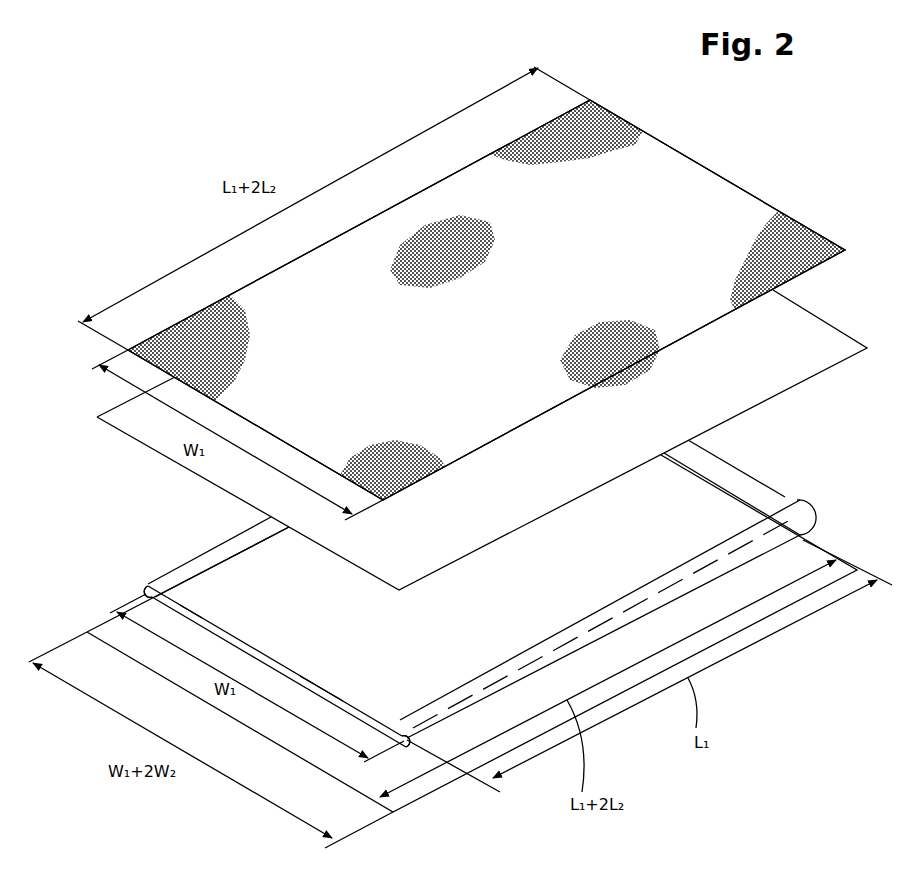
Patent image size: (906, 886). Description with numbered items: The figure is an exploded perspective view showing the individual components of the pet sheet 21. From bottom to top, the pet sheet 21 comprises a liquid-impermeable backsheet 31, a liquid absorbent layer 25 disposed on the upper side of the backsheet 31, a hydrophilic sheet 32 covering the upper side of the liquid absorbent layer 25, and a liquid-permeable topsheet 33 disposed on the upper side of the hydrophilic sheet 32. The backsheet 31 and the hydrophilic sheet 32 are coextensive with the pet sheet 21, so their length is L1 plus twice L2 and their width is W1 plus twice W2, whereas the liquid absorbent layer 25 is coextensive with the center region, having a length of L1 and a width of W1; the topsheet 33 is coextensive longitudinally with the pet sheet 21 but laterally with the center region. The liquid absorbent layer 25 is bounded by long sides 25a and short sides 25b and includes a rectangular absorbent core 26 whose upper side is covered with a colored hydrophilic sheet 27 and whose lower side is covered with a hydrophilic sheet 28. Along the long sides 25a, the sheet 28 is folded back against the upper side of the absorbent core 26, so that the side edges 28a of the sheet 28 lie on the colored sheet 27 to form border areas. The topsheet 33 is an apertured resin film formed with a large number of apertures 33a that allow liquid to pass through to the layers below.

The pet sheet 21 is at (647, 96).
The liquid absorbent layer 25 is at (292, 667).
The long sides of the liquid absorbent layer 25a is at (190, 560).
The short sides of the liquid absorbent layer 25b is at (723, 486).
The absorbent core 26 is at (343, 697).
The colored hydrophilic sheet 27 is at (202, 607).
The hydrophilic sheet 28 is at (368, 727).
The side edges of the sheet 28a is at (250, 553).
The liquid-impermeable backsheet 31 is at (433, 776).
The hydrophilic sheet 32 is at (528, 522).
The liquid-permeable topsheet 33 is at (505, 432).
The apertures 33a is at (628, 370).